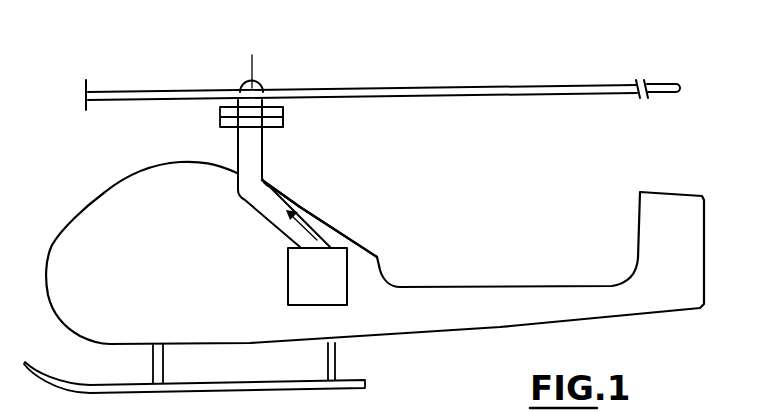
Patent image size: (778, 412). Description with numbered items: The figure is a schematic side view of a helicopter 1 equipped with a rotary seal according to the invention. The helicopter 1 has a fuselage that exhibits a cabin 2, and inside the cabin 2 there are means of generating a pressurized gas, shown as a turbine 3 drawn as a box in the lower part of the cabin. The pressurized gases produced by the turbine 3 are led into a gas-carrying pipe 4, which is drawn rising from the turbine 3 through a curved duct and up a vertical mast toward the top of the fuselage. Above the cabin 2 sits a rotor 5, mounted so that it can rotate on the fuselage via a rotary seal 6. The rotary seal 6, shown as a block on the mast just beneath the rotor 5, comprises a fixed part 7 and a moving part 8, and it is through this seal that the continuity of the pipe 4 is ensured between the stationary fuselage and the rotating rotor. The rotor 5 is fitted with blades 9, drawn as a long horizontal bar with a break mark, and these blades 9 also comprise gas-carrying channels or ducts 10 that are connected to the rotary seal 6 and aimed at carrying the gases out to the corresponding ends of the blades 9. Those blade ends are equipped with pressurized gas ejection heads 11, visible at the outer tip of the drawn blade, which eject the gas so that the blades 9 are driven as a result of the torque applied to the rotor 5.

The helicopter 1 is at (90, 184).
The cabin 2 is at (353, 223).
The turbine 3 is at (322, 282).
The gas-carrying pipe 4 is at (270, 206).
The rotor 5 is at (273, 83).
The rotary seal 6 is at (214, 123).
The fixed part 7 is at (273, 127).
The moving part 8 is at (273, 110).
The blades 9 is at (523, 83).
The gas-carrying channels 10 is at (362, 96).
The pressurized gas ejection heads 11 is at (678, 97).